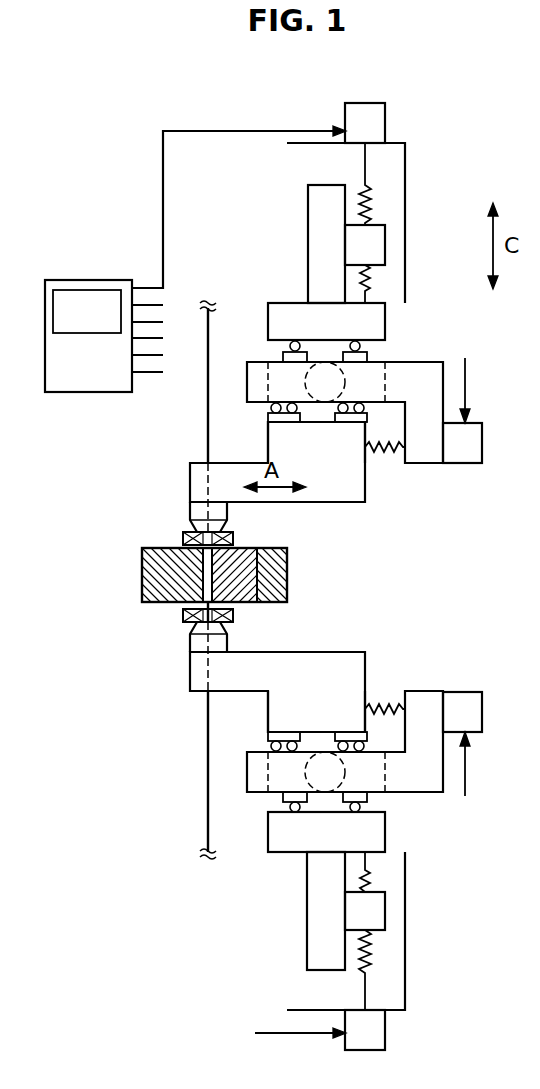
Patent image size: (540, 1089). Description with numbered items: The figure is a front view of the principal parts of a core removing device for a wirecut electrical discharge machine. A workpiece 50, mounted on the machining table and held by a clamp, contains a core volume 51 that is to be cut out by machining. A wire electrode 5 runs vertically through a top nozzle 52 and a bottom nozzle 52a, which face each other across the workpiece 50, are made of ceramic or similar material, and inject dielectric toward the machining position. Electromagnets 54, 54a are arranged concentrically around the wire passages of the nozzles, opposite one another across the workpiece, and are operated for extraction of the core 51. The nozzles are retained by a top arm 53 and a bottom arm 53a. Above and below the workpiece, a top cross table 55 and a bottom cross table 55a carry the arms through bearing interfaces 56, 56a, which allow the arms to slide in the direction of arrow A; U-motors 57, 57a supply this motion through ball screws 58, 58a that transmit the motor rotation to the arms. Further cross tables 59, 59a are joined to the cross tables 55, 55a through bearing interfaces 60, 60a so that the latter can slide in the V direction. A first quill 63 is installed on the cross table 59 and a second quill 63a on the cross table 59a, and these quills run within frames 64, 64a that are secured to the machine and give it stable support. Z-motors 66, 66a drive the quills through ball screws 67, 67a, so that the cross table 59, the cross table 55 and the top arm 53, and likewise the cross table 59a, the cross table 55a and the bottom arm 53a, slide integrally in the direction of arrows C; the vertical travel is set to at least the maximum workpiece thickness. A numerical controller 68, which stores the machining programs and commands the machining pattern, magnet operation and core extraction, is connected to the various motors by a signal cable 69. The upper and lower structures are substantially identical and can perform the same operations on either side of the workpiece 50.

The wire electrode 5 is at (207, 400).
The workpiece 50 is at (164, 546).
The core volume 51 is at (240, 603).
The top nozzle 52 is at (192, 512).
The bottom nozzle 52a is at (190, 616).
The top arm 53 is at (341, 503).
The bottom arm 53a is at (340, 652).
The electromagnets 54 is at (237, 537).
The magnet 54a is at (237, 618).
The top cross table 55 is at (262, 368).
The bottom cross table 55a is at (428, 793).
The bearing interface 56 is at (272, 414).
The bearing interface 56a is at (270, 743).
The U-motor 57 is at (484, 443).
The U-motor 57a is at (484, 703).
The ball screw 58 is at (379, 456).
The ball screw 58a is at (387, 699).
The top cross table 59 is at (386, 328).
The bottom cross table 59a is at (386, 838).
The bearing interface 60 is at (361, 347).
The bearing interface 60a is at (361, 806).
The first quill 63 is at (308, 243).
The second quill 63a is at (307, 920).
The frame 64 is at (406, 243).
The frame 64a is at (406, 940).
The Z-motor 66 is at (385, 110).
The Z-motor 66a is at (385, 1043).
The ball screw 67 is at (372, 201).
The ball screw 67a is at (371, 967).
The numerical controller 68 is at (79, 279).
The signal cable 69 is at (165, 200).